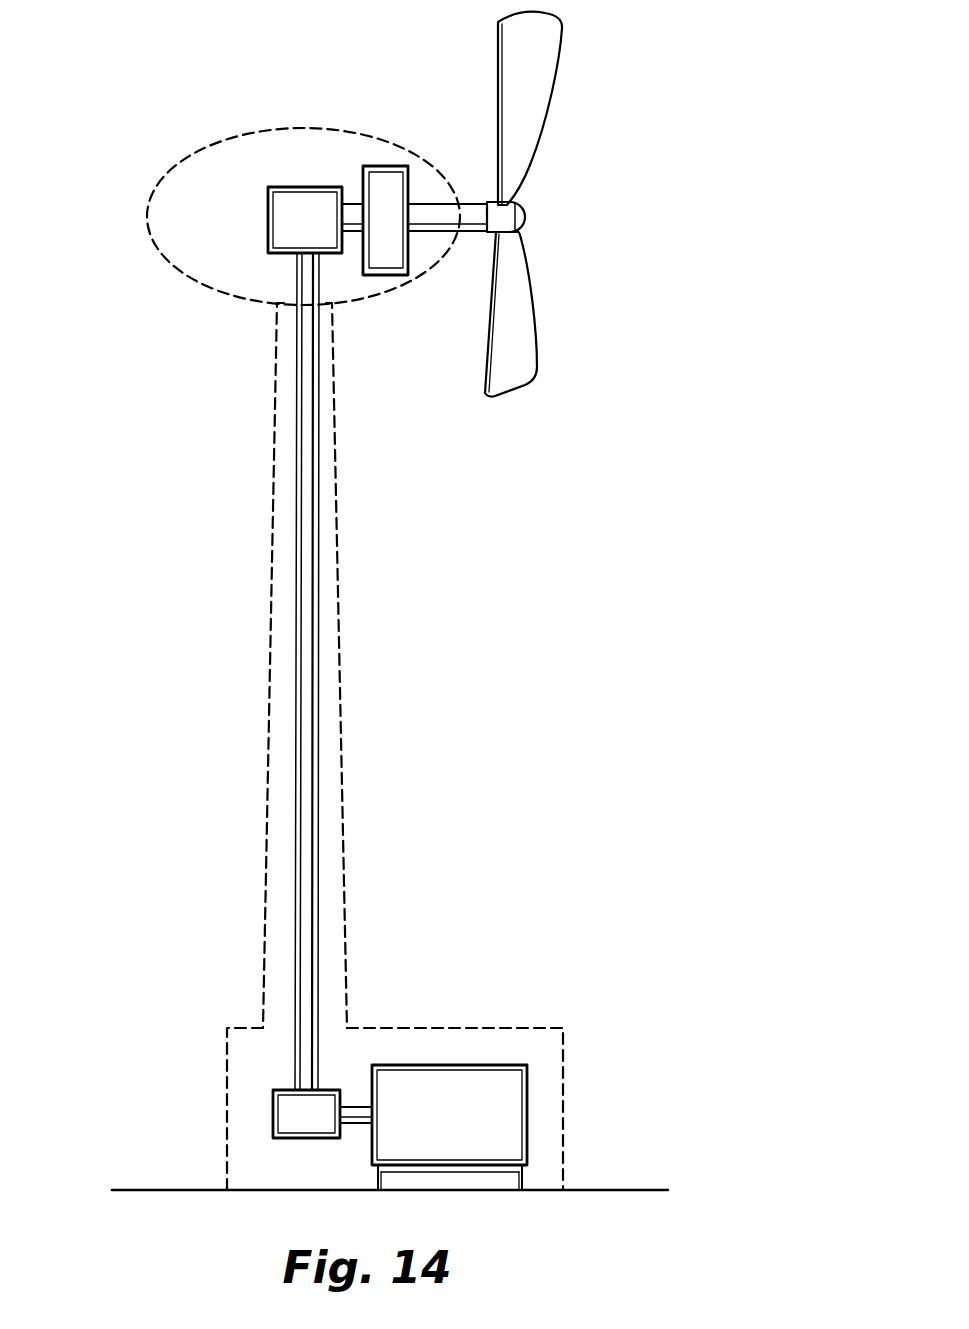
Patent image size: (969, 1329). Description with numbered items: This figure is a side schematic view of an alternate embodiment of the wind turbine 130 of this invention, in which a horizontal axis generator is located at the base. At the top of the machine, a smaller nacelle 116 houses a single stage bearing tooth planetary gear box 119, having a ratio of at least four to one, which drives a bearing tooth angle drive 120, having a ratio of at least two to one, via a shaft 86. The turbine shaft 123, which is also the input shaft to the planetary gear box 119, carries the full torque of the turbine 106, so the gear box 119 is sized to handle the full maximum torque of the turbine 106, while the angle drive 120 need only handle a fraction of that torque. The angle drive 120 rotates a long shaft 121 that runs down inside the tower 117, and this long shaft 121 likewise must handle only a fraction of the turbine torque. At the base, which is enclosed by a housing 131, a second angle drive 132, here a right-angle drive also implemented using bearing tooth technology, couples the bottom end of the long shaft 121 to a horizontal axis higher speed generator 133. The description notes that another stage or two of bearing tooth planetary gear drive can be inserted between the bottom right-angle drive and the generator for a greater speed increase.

The wind turbine system 130 is at (158, 127).
The nacelle 116 is at (197, 282).
The tower 117 is at (268, 755).
The base housing 131 is at (565, 1063).
The bearing tooth angle drive 120 is at (282, 214).
The shaft 86 is at (354, 210).
The single stage bearing tooth planetary gear box 119 is at (383, 183).
The turbine shaft 123 is at (442, 214).
The turbine 106 is at (572, 97).
The long shaft 121 is at (303, 583).
The second angle drive 132 is at (288, 1121).
The horizontal axis higher speed generator 133 is at (443, 1092).